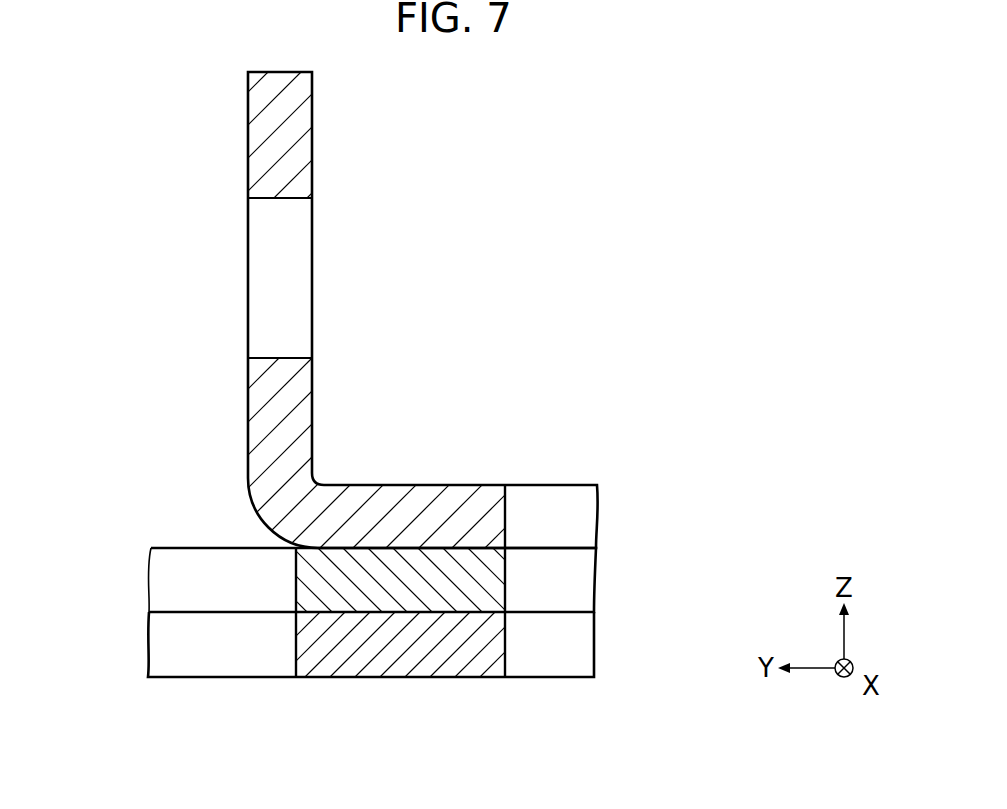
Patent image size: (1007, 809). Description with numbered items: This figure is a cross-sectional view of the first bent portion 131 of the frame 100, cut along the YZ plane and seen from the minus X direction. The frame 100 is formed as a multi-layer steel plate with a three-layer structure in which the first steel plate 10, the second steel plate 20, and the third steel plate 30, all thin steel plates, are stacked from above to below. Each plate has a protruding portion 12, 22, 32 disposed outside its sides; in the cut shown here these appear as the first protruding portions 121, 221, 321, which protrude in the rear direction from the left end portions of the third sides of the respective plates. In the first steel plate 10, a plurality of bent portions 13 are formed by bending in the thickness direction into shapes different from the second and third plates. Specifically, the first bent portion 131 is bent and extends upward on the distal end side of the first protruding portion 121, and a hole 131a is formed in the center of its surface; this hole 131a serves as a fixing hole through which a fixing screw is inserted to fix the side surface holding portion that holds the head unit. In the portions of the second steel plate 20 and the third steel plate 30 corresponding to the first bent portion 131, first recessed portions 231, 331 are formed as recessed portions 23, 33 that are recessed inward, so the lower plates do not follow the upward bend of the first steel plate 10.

The frame 100 is at (612, 114).
The first steel plate 10 is at (587, 523).
The protruding portion 12 is at (426, 488).
The first protruding portion 121 is at (428, 490).
The bent portion 13 is at (365, 453).
The first bent portion 131 is at (248, 382).
The hole 131a is at (287, 200).
The second steel plate 20 is at (587, 587).
The protruding portion 22 is at (412, 644).
The first protruding portion 221 is at (468, 600).
The recessed portion 23 is at (239, 644).
The first recessed portion 231 is at (258, 590).
The third steel plate 30 is at (587, 651).
The protruding portion 32 is at (425, 676).
The first protruding portion 321 is at (385, 655).
The recessed portion 33 is at (206, 676).
The first recessed portion 331 is at (183, 655).